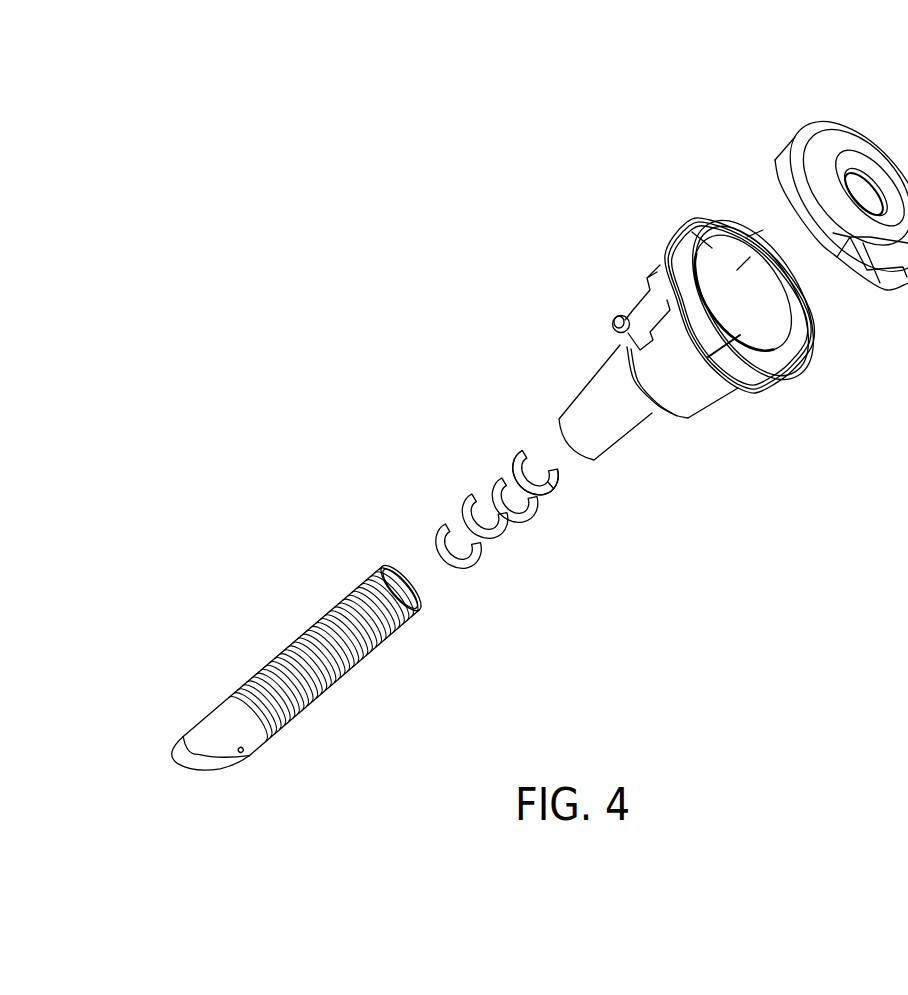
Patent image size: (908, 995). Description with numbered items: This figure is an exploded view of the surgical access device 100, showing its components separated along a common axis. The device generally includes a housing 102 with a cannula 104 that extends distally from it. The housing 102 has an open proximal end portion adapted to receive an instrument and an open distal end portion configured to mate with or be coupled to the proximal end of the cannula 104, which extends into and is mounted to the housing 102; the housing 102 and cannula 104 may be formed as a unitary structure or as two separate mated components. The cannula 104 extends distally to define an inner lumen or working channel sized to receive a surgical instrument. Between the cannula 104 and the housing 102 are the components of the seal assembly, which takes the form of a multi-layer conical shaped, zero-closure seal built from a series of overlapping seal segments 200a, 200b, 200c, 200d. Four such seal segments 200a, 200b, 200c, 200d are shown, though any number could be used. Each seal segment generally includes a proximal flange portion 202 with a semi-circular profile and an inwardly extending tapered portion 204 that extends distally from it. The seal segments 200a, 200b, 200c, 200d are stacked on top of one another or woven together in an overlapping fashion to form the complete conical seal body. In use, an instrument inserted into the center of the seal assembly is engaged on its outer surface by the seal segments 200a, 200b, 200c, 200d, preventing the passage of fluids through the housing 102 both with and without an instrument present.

The surgical access device 100 is at (537, 410).
The housing 102 is at (746, 249).
The cannula 104 is at (409, 547).
The seal segment 200a is at (577, 490).
The seal segment 200b is at (484, 515).
The seal segment 200c is at (514, 499).
The seal segment 200d is at (534, 472).
The proximal flange portion 202 is at (555, 480).
The inwardly extending tapered portion 204 is at (527, 460).